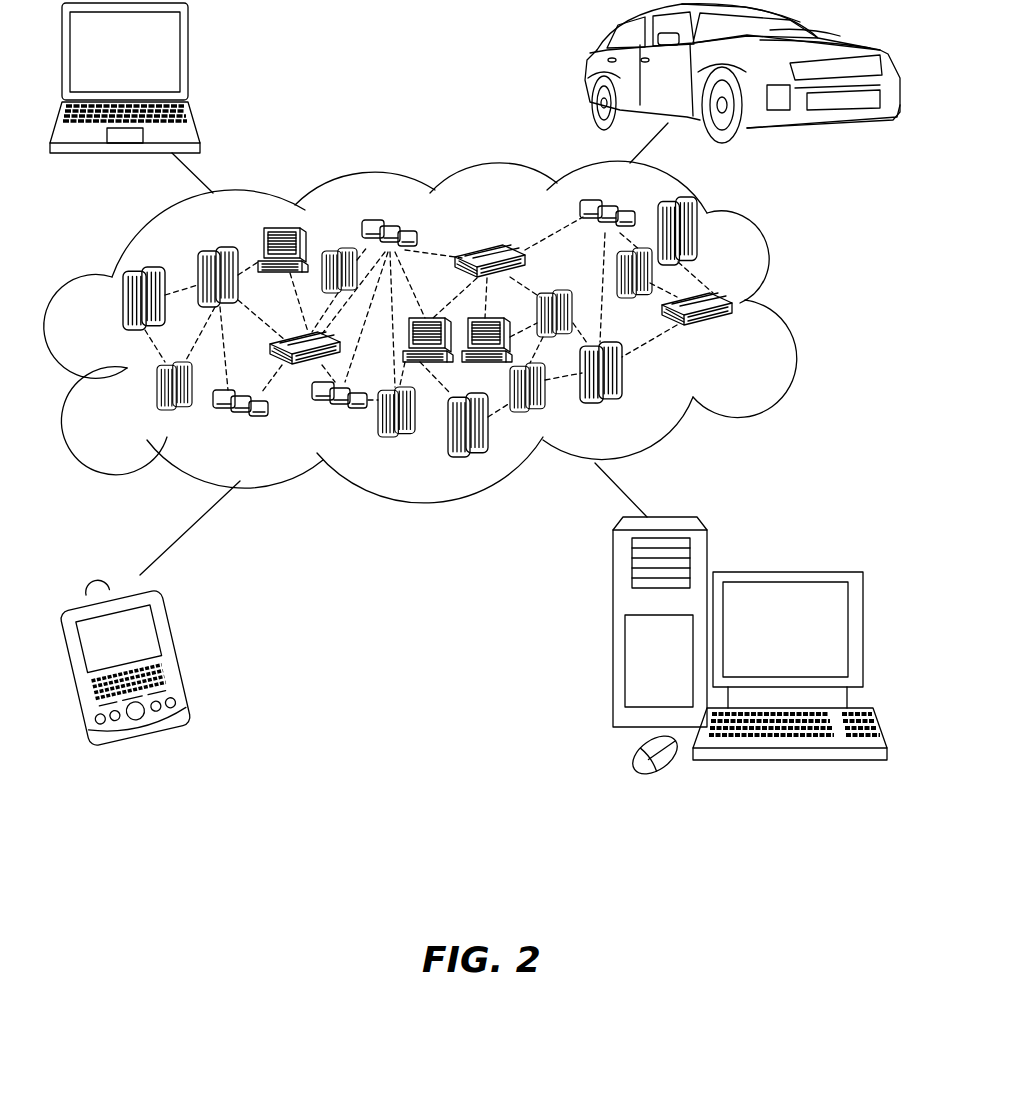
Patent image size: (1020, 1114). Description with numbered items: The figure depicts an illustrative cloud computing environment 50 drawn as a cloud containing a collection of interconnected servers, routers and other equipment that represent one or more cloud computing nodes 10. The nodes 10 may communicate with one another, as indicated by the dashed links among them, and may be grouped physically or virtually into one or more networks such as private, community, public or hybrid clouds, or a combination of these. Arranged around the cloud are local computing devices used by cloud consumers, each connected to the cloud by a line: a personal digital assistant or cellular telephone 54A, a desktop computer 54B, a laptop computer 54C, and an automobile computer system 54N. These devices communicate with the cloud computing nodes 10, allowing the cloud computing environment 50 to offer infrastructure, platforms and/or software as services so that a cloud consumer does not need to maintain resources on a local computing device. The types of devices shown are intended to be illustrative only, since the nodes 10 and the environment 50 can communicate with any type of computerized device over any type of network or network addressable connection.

The cloud computing environment 50 is at (788, 305).
The cloud computing nodes 10 is at (732, 335).
The personal digital assistant or cellular telephone 54A is at (180, 654).
The desktop computer 54B is at (787, 571).
The laptop computer 54C is at (189, 59).
The automobile computer system 54N is at (589, 72).